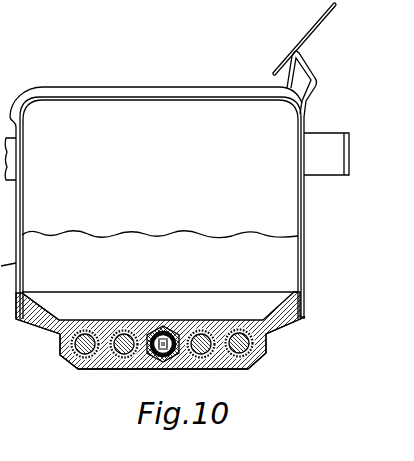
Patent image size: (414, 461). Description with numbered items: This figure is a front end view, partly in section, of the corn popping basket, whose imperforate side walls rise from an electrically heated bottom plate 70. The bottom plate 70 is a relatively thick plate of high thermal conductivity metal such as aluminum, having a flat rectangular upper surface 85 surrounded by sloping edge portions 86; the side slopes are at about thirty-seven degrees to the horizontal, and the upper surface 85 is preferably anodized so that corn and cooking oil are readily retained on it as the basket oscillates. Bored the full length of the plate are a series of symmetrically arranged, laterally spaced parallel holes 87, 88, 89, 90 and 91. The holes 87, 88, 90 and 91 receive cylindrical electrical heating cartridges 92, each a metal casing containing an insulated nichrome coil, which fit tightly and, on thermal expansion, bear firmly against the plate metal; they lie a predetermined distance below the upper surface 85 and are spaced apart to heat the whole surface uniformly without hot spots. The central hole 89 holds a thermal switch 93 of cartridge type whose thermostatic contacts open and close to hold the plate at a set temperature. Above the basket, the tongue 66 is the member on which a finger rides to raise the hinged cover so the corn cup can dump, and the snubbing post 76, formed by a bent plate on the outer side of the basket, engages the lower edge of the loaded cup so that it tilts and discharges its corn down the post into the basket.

The tongue 66 is at (320, 24).
The snubbing post 76 is at (313, 79).
The bottom plate 70 is at (116, 318).
The sloping edge portions 86 is at (38, 303).
The hole 87 is at (68, 360).
The hole 88 is at (110, 370).
The central hole 89 is at (167, 322).
The hole 90 is at (228, 368).
The hole 91 is at (258, 356).
The electrical heating cartridge 92 is at (70, 345).
The thermal switch 93 is at (190, 320).
The upper surface 85 is at (227, 318).